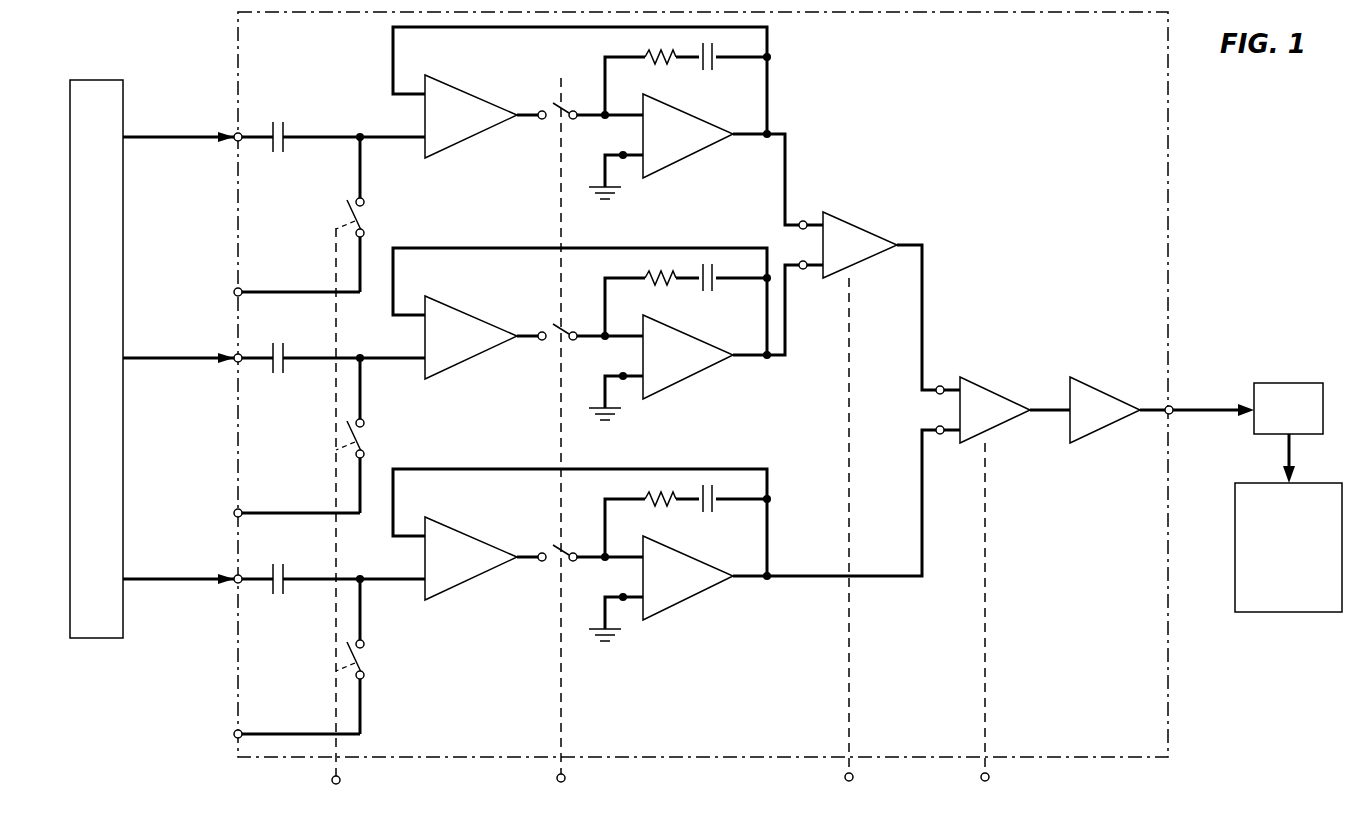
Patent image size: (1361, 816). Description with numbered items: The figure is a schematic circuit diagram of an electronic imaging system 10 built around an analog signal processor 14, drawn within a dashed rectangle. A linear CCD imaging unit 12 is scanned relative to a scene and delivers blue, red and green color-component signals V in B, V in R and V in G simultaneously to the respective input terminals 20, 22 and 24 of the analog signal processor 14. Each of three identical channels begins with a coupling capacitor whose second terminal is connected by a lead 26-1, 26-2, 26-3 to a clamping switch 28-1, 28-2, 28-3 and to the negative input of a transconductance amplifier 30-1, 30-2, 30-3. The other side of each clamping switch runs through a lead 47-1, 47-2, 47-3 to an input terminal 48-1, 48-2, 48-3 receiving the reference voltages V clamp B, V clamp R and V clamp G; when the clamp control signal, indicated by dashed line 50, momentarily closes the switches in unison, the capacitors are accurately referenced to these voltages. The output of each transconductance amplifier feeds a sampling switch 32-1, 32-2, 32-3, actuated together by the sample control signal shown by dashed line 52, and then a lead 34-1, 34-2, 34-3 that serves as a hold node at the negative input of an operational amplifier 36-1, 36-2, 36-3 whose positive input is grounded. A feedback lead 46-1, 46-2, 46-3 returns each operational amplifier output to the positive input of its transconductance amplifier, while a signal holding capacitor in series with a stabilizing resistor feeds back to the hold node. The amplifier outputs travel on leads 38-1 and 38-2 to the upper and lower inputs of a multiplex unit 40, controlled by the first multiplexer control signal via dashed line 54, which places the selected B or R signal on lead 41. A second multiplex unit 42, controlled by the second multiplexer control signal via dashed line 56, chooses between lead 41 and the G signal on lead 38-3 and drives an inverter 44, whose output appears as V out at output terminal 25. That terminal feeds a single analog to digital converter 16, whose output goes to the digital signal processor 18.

The electronic imaging system 10 is at (101, 34).
The linear CCD imaging unit 12 is at (100, 638).
The analog signal processor 14 is at (238, 45).
The analog to digital converter 16 is at (1290, 383).
The digital signal processor 18 is at (1275, 612).
The input terminal 20 is at (236, 139).
The input terminal 22 is at (236, 360).
The input terminal 24 is at (236, 581).
The output terminal 25 is at (1175, 412).
The lead 26-1 is at (327, 139).
The lead 26-2 is at (316, 360).
The lead 26-3 is at (314, 582).
The clamping switch 28-1 is at (370, 222).
The clamping switch 28-2 is at (370, 443).
The clamping switch 28-3 is at (370, 664).
The transconductance amplifier 30-1 is at (470, 88).
The transconductance amplifier 30-2 is at (470, 309).
The transconductance amplifier 30-3 is at (470, 530).
The sampling switch 32-1 is at (570, 103).
The sampling switch 32-2 is at (570, 324).
The sampling switch 32-3 is at (570, 545).
The lead 34-1 is at (585, 120).
The lead 34-2 is at (585, 341).
The lead 34-3 is at (585, 562).
The operational amplifier 36-1 is at (690, 160).
The operational amplifier 36-2 is at (690, 381).
The operational amplifier 36-3 is at (690, 602).
The lead 38-1 is at (785, 172).
The lead 38-2 is at (785, 355).
The lead 38-3 is at (830, 580).
The multiplex unit 40 is at (857, 222).
The lead 41 is at (922, 295).
The multiplex unit 42 is at (985, 385).
The inverter 44 is at (1095, 385).
The feedback lead 46-1 is at (393, 56).
The feedback lead 46-2 is at (395, 262).
The feedback lead 46-3 is at (395, 483).
The lead 47-1 is at (298, 292).
The lead 47-2 is at (282, 513).
The lead 47-3 is at (268, 734).
The input terminal 48-1 is at (234, 293).
The input terminal 48-2 is at (234, 515).
The input terminal 48-3 is at (234, 737).
The dashed line 50 is at (336, 258).
The dashed line 52 is at (558, 147).
The dashed line 54 is at (849, 695).
The dashed line 56 is at (985, 695).